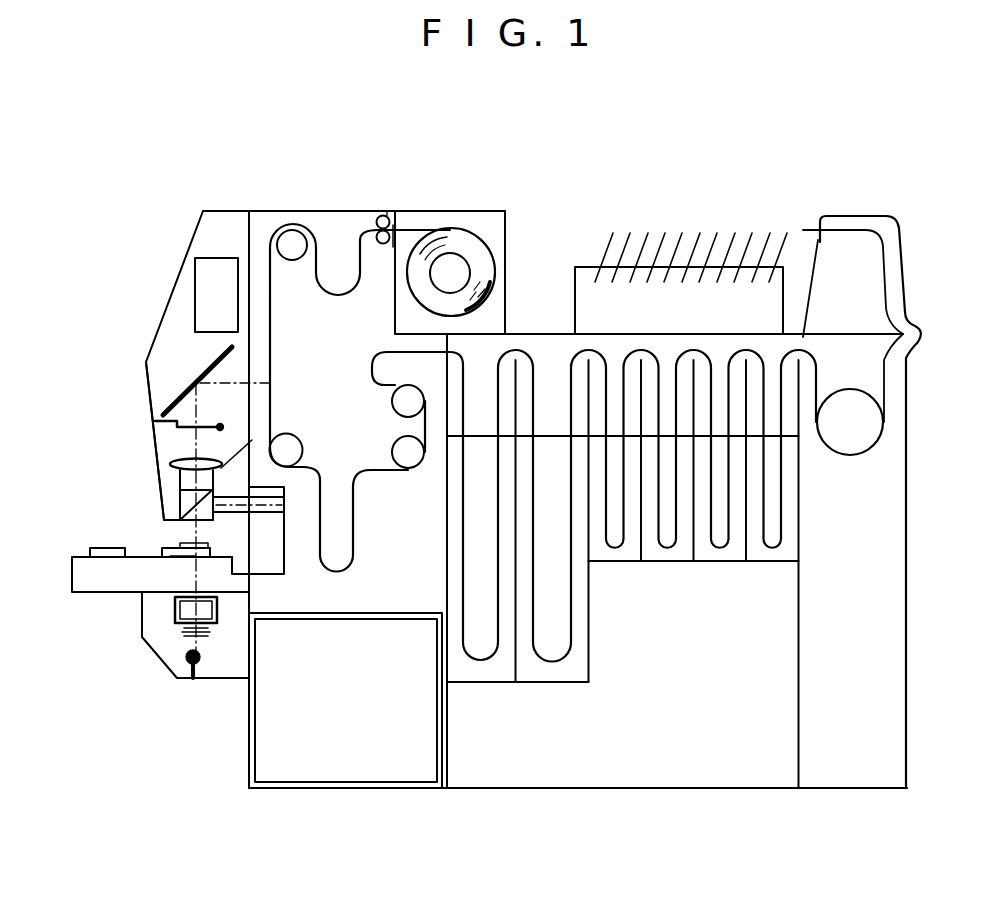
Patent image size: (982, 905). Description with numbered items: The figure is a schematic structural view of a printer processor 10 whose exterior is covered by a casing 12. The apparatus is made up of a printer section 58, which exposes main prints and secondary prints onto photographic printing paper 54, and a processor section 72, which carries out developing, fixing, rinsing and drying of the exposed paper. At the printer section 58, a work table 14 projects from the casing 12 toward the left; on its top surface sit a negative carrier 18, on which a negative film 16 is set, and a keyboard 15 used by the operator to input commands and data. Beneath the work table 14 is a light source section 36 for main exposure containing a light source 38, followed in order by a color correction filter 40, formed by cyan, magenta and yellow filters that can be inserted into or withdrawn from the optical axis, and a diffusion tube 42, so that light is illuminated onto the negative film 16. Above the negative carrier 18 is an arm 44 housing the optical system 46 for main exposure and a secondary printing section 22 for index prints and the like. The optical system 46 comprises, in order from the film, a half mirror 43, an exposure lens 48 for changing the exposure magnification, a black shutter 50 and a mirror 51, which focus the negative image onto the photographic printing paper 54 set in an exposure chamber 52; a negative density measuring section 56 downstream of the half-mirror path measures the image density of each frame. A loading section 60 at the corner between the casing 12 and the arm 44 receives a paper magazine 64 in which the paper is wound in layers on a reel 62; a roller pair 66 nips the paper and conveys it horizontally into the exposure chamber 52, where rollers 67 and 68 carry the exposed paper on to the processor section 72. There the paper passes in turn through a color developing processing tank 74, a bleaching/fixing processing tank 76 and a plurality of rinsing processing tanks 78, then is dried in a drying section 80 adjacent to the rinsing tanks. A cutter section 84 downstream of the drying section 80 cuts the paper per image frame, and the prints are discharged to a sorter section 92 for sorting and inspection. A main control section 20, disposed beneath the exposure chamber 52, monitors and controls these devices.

The printer processor 10 is at (566, 168).
The casing 12 is at (343, 210).
The work table 14 is at (82, 578).
The keyboard 15 is at (100, 547).
The negative film 16 is at (180, 540).
The negative carrier 18 is at (170, 556).
The main control section 20 is at (437, 750).
The secondary printing section 22 is at (206, 258).
The light source section 36 is at (146, 664).
The light source 38 is at (202, 672).
The color correction filter 40 is at (247, 687).
The diffusion tube 42 is at (218, 613).
The half mirror 43 is at (180, 503).
The arm 44 is at (148, 347).
The optical system for main exposure 46 is at (170, 443).
The exposure lens 48 is at (177, 466).
The black shutter 50 is at (155, 422).
The mirror 51 is at (196, 379).
The exposure chamber 52 is at (331, 340).
The photographic printing paper 54 is at (353, 505).
The negative density measuring section 56 is at (258, 512).
The printer section 58 is at (438, 824).
The loading section 60 is at (393, 228).
The reel 62 is at (460, 273).
The paper magazine 64 is at (505, 230).
The roller pair 66 is at (389, 216).
The roller 67 is at (292, 240).
The rollers 68 is at (289, 440).
The processor section 72 is at (903, 824).
The color developing processing tank 74 is at (492, 680).
The bleaching/fixing processing tank 76 is at (564, 680).
The rinsing processing tanks 78 is at (788, 570).
The drying section 80 is at (888, 666).
The cutter section 84 is at (855, 200).
The sorter section 92 is at (590, 260).